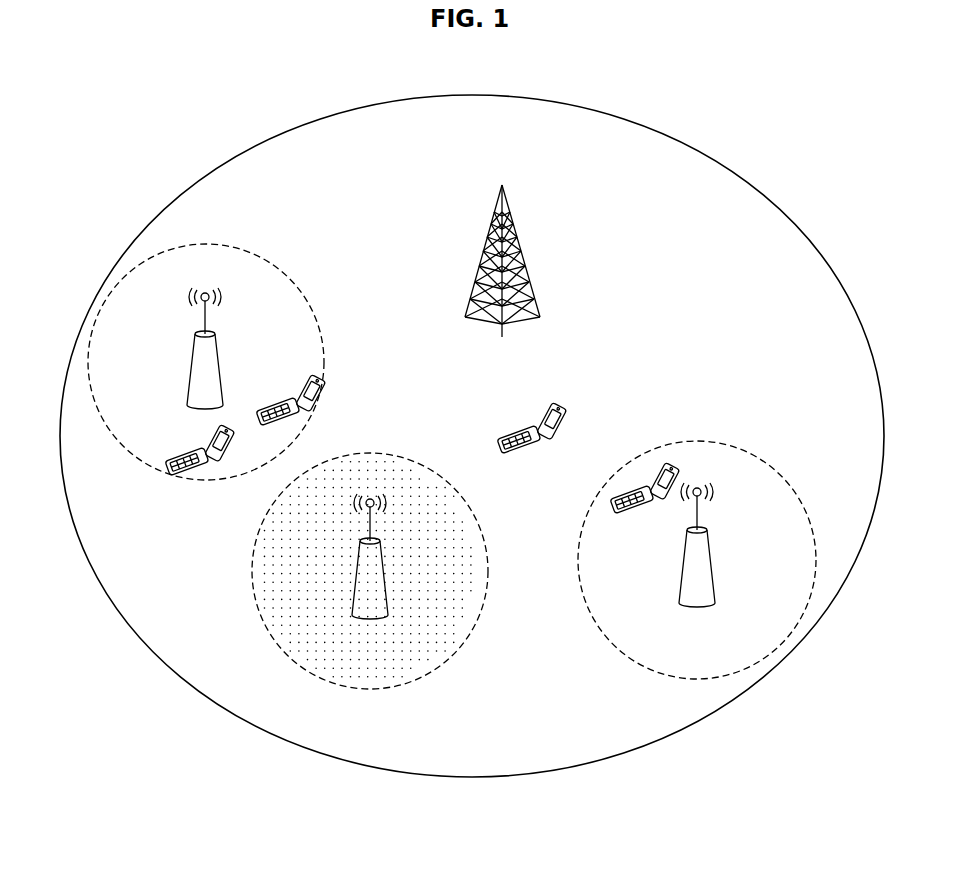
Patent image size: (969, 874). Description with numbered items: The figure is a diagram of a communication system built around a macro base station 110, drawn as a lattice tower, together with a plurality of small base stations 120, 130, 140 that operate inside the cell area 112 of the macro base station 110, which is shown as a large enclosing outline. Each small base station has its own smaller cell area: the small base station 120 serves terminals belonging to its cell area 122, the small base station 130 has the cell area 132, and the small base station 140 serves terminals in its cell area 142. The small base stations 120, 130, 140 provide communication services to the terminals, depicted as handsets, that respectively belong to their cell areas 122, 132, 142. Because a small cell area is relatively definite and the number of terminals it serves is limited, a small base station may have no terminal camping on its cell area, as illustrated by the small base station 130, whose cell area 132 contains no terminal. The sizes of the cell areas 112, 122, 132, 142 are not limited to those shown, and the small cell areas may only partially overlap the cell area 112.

The macro base station 110 is at (517, 256).
The cell area of the macro base station 112 is at (688, 141).
The small base station 120 is at (218, 362).
The cell area of the small base station 122 is at (289, 279).
The small base station 130 is at (382, 570).
The cell area of the small base station 132 is at (392, 452).
The small base station 140 is at (708, 560).
The cell area of the small base station 142 is at (733, 442).